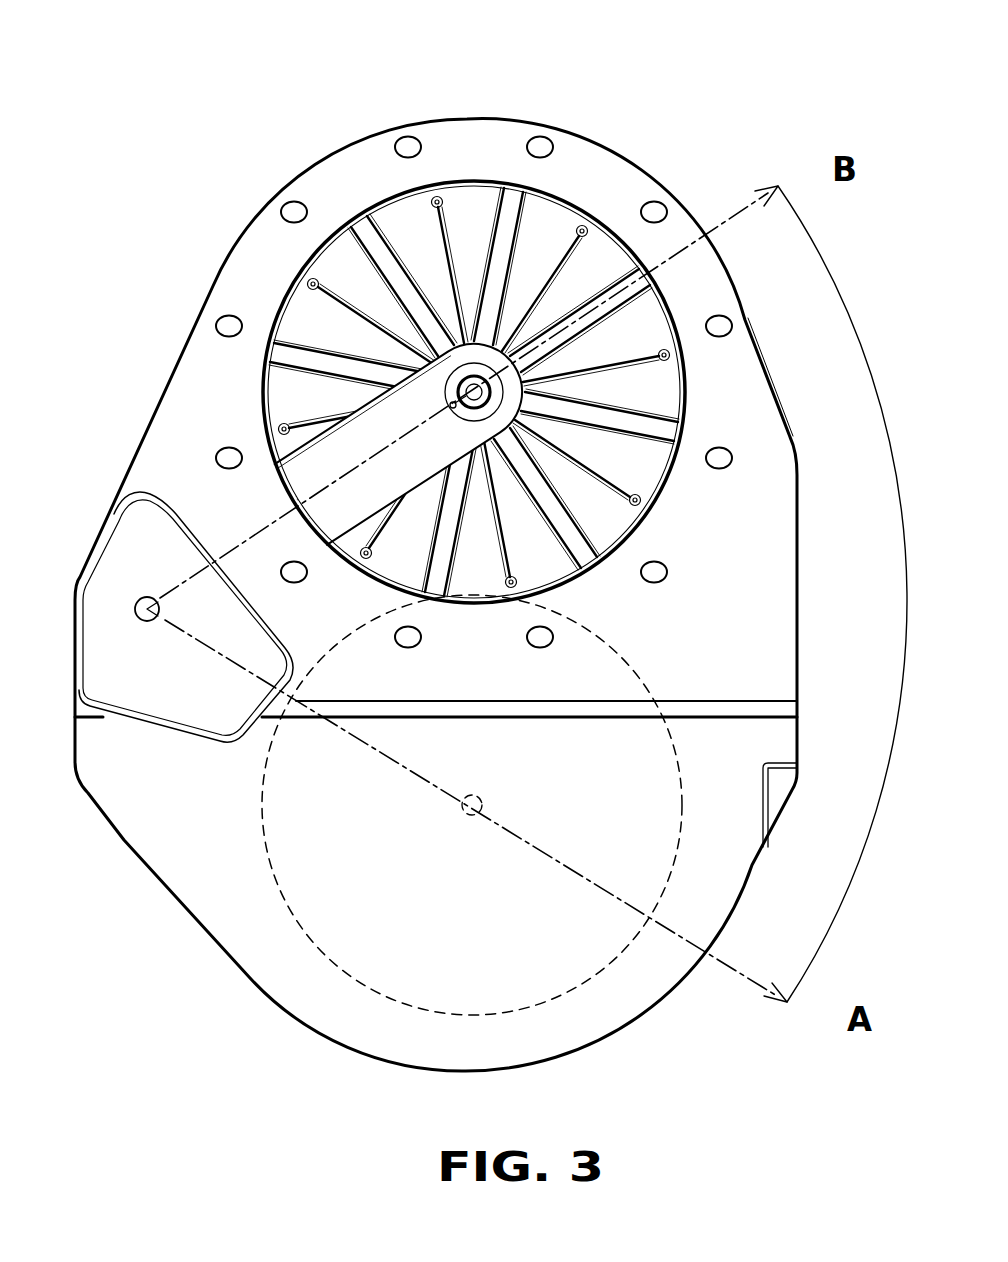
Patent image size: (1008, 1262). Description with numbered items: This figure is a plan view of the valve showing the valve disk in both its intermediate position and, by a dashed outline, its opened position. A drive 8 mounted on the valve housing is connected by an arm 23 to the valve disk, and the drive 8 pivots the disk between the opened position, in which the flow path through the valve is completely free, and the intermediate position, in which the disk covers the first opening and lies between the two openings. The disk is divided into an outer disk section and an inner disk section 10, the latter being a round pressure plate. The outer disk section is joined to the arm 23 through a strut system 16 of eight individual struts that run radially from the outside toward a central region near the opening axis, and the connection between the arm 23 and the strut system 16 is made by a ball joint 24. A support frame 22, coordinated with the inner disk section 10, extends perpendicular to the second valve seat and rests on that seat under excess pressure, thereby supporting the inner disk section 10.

The drive 8 is at (142, 593).
The inner disk section 10 is at (409, 309).
The strut system 16 is at (640, 265).
The support frame 22 is at (412, 190).
The arm 23 is at (388, 420).
The ball joint 24 is at (466, 386).